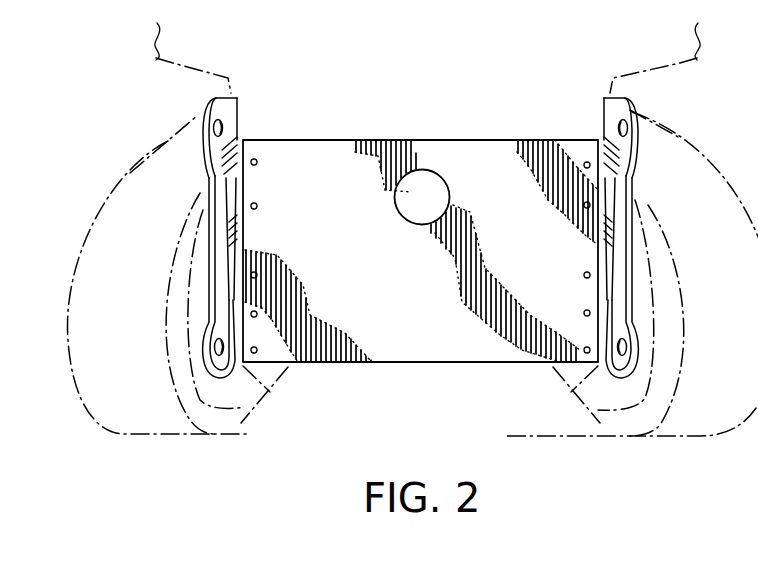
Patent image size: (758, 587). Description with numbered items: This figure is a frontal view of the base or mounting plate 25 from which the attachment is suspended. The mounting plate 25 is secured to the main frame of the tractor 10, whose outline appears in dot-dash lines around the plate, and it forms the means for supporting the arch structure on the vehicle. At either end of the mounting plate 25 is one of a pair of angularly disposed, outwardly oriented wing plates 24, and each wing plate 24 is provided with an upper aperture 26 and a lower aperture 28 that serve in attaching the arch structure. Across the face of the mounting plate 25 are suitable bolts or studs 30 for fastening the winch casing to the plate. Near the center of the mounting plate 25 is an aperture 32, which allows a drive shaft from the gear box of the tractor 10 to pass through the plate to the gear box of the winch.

The tractor 10 is at (679, 63).
The wing plate 24 is at (240, 197).
The mounting plate 25 is at (431, 346).
The upper aperture 26 is at (611, 127).
The lower aperture 28 is at (223, 351).
The bolt or stud 30 is at (257, 160).
The aperture 32 is at (431, 190).